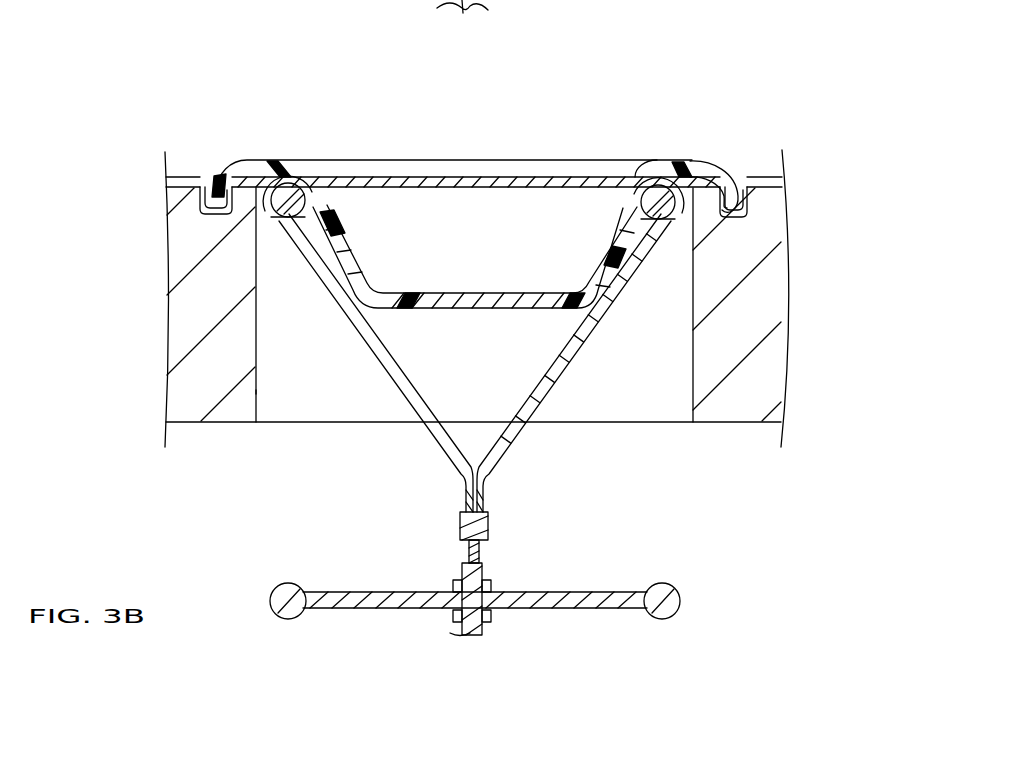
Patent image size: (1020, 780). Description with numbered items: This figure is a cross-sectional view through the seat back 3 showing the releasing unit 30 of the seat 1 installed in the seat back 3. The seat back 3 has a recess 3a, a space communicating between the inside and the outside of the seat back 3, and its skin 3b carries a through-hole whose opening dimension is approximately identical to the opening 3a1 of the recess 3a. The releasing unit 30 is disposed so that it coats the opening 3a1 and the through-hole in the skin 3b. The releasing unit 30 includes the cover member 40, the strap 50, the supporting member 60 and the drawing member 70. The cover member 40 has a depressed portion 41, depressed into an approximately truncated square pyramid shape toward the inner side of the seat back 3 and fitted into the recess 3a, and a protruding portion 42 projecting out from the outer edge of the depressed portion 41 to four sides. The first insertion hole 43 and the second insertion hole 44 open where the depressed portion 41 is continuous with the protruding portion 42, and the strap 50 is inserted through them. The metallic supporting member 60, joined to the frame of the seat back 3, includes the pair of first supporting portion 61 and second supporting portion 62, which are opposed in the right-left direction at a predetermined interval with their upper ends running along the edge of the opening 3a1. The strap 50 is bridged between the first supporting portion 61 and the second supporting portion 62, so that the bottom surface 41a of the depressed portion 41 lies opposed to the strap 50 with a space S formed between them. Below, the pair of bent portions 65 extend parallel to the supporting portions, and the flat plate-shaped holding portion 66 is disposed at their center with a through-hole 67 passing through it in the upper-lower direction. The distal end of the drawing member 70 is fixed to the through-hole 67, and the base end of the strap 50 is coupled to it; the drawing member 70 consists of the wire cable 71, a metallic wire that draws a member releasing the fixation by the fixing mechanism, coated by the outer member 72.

The device 1 is at (130, 83).
The seat back 3 is at (757, 103).
The recess 3a is at (257, 392).
The opening 3a1 is at (221, 166).
The skin 3b is at (176, 150).
The releasing unit 30 is at (737, 161).
The cover member 40 is at (565, 156).
The depressed portion 41 is at (475, 256).
The bottom surface 41a is at (430, 290).
The protruding portion 42 is at (254, 170).
The first insertion hole 43 is at (665, 162).
The second insertion hole 44 is at (293, 172).
The strap 50 is at (481, 183).
The space S is at (475, 252).
The supporting member 60 is at (492, 418).
The first supporting portion 61 is at (676, 203).
The second supporting portion 62 is at (272, 206).
The bent portions 65 is at (285, 593).
The holding portion 66 is at (373, 600).
The through-hole 67 is at (483, 632).
The drawing member 70 is at (547, 530).
The wire cable 71 is at (478, 555).
The outer member 72 is at (482, 574).